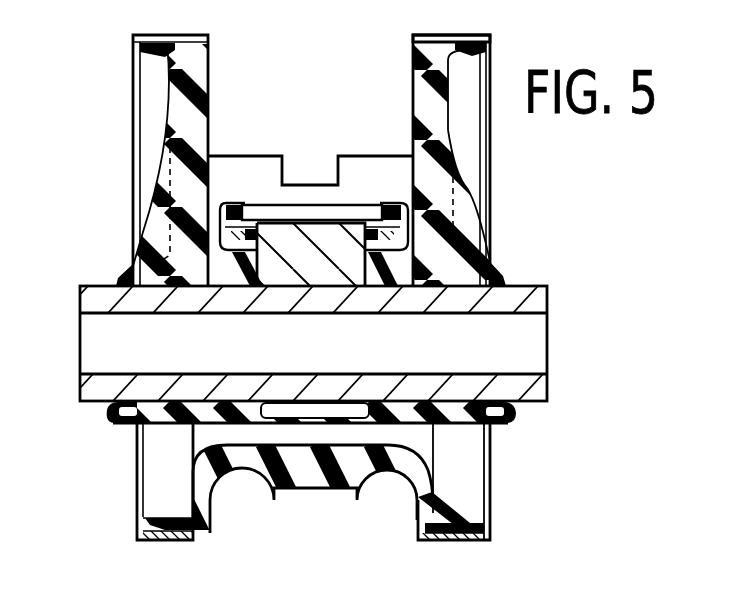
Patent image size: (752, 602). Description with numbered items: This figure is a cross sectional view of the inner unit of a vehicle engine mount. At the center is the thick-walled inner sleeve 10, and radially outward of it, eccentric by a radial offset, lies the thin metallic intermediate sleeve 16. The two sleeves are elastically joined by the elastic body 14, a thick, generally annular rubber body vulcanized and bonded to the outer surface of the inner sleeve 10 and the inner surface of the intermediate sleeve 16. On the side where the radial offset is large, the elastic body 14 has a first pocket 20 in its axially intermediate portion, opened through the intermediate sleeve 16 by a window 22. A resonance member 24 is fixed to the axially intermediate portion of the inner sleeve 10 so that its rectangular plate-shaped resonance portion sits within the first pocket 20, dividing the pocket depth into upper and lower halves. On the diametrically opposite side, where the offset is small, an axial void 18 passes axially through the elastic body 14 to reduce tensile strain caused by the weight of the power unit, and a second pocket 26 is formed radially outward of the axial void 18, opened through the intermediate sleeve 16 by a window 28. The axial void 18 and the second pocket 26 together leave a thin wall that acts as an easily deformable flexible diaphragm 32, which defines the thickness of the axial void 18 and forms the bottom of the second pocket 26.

The inner sleeve 10 is at (101, 395).
The elastic body 14 is at (433, 183).
The intermediate sleeve 16 is at (157, 540).
The axial void 18 is at (407, 438).
The first pocket 20 is at (208, 62).
The window 22 is at (413, 38).
The resonance member 24 is at (292, 240).
The second pocket 26 is at (413, 515).
The window 28 is at (203, 537).
The flexible diaphragm 32 is at (250, 460).